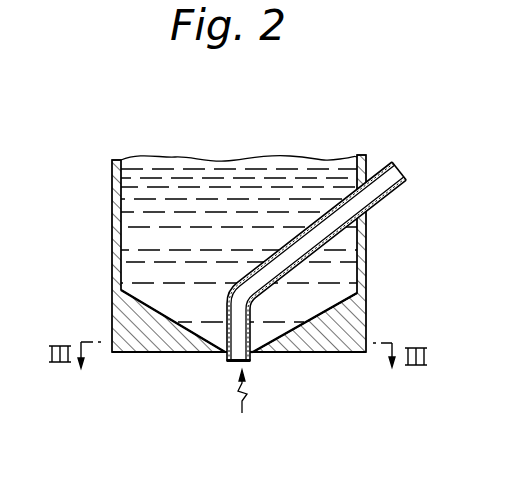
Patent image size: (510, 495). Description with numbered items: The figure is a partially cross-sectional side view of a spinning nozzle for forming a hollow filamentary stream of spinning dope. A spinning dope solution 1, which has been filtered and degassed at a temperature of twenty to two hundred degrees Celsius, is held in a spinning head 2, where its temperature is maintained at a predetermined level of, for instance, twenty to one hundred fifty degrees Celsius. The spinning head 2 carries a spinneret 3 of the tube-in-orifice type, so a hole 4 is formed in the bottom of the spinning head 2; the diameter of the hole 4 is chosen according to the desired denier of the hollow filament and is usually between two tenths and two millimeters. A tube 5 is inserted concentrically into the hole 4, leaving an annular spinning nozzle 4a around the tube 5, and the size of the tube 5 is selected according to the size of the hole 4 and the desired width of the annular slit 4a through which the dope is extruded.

The spinning dope solution 1 is at (126, 262).
The spinning head 2 is at (112, 197).
The spinneret 3 is at (236, 447).
The hole 4 is at (252, 358).
The annular spinning nozzle 4a is at (225, 357).
The tube 5 is at (258, 306).